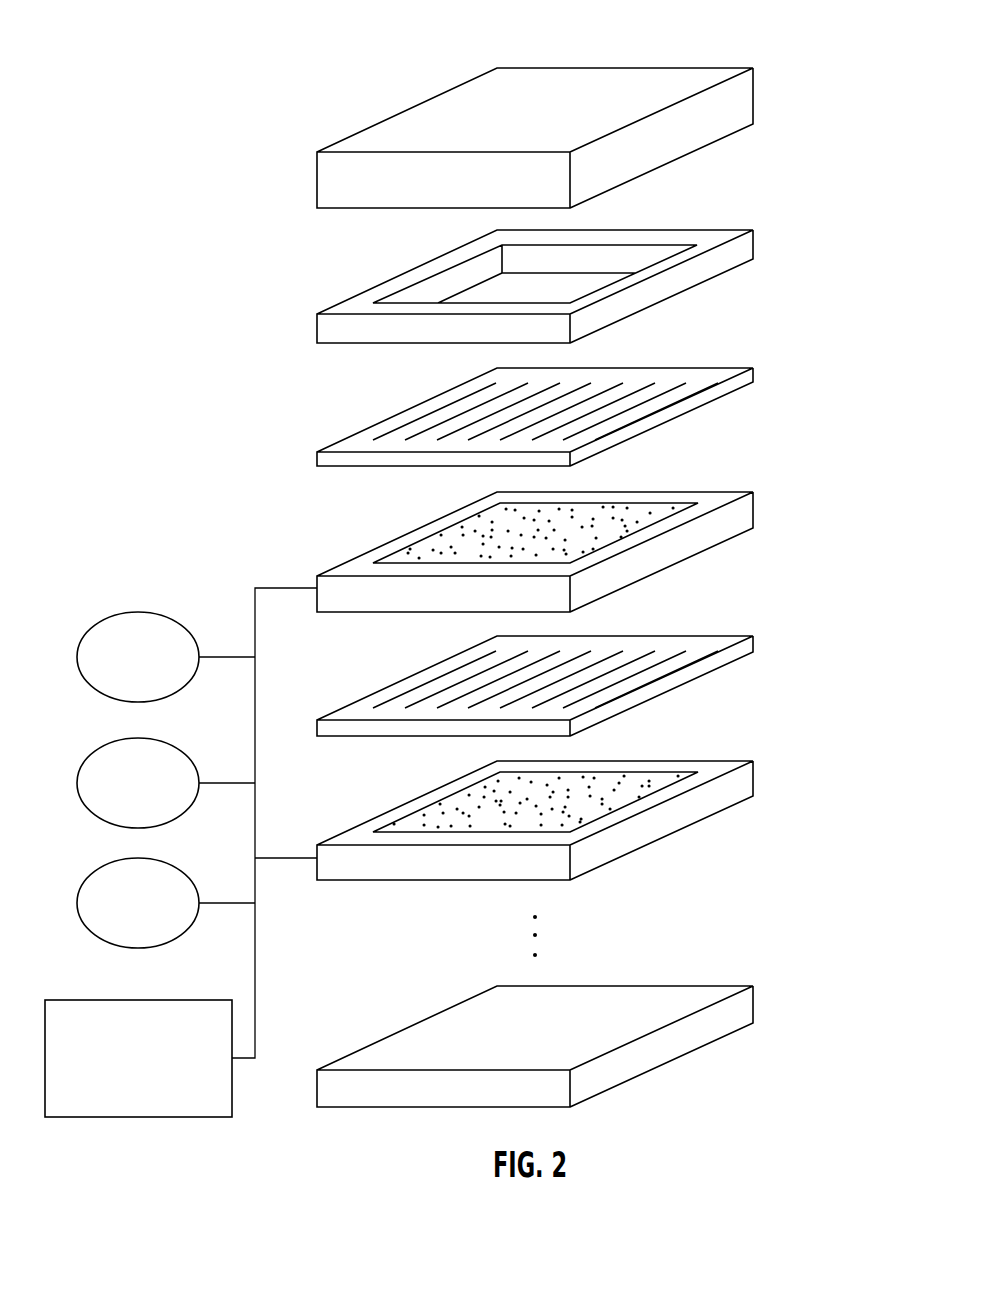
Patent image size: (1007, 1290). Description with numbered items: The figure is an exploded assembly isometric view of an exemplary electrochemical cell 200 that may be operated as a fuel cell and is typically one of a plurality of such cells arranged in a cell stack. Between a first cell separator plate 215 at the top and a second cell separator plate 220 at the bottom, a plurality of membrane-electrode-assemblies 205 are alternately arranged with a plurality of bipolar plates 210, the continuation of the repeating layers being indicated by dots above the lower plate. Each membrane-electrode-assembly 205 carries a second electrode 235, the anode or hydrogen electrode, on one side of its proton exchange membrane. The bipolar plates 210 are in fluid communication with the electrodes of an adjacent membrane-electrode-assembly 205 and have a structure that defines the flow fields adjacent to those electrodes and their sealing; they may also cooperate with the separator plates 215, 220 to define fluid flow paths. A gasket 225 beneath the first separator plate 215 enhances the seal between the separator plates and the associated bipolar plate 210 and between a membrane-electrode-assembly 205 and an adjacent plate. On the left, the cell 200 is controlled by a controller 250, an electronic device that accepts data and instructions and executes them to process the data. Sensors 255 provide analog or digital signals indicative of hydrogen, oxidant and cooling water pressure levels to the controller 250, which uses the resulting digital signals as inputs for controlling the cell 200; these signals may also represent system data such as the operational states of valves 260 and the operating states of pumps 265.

The electrochemical cell 200 is at (386, 27).
The first cell separator plate 215 is at (755, 97).
The gasket 225 is at (755, 250).
The bipolar plate 210 is at (757, 378).
The membrane-electrode-assembly 205 is at (578, 677).
The second electrode 235 is at (453, 542).
The second cell separator plate 220 is at (757, 1004).
The sensor 255 is at (120, 612).
The valve 260 is at (102, 746).
The pump 265 is at (96, 870).
The controller 250 is at (173, 1120).